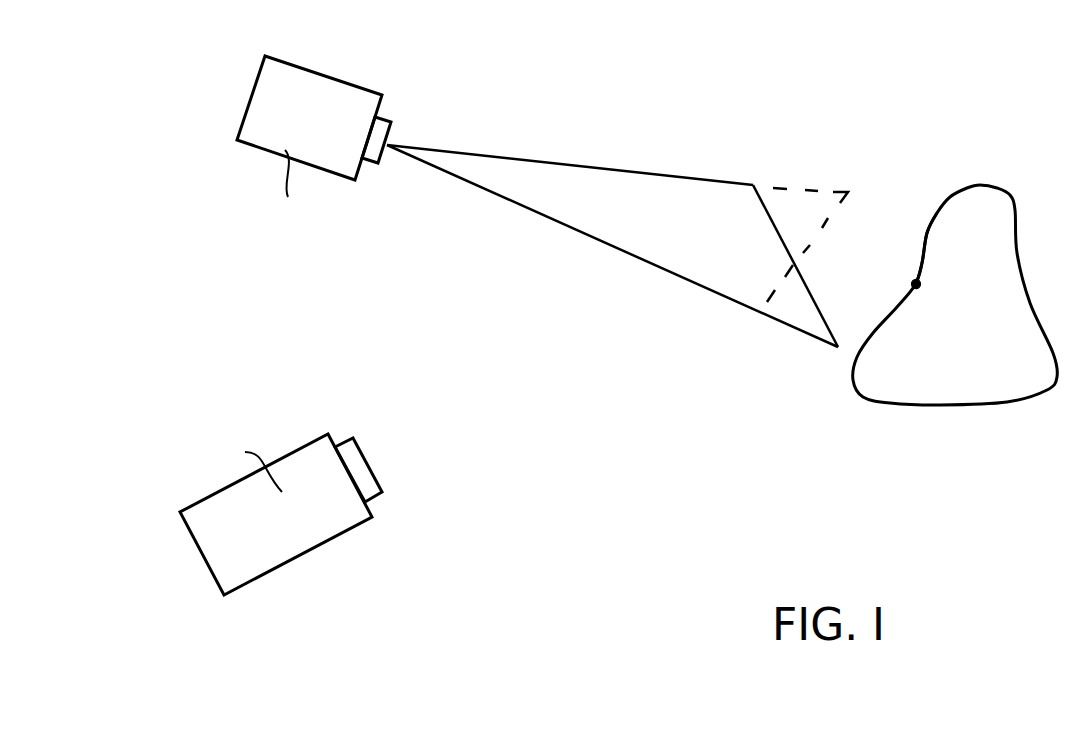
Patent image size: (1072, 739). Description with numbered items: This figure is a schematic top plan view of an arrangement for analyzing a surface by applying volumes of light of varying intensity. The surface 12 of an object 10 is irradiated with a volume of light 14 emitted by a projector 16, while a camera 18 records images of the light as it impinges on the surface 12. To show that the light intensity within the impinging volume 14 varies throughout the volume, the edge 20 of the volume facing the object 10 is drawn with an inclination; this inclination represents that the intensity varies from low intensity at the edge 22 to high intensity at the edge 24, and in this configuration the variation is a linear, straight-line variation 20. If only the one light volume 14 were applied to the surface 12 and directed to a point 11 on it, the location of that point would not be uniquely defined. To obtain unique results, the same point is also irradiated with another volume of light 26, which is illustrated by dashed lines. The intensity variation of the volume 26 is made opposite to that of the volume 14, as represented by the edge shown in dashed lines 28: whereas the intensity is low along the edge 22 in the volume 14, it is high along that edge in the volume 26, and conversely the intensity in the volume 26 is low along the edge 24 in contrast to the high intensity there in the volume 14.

The object 10 is at (978, 324).
The point 11 is at (911, 284).
The surface 12 is at (927, 237).
The volume of light 14 is at (612, 229).
The projector 16 is at (322, 85).
The camera 18 is at (267, 555).
The edge of the volume facing the object 20 is at (780, 230).
The edge 22 is at (583, 163).
The edge 24 is at (678, 280).
The volume of light 26 is at (817, 215).
The edge 28 is at (780, 293).